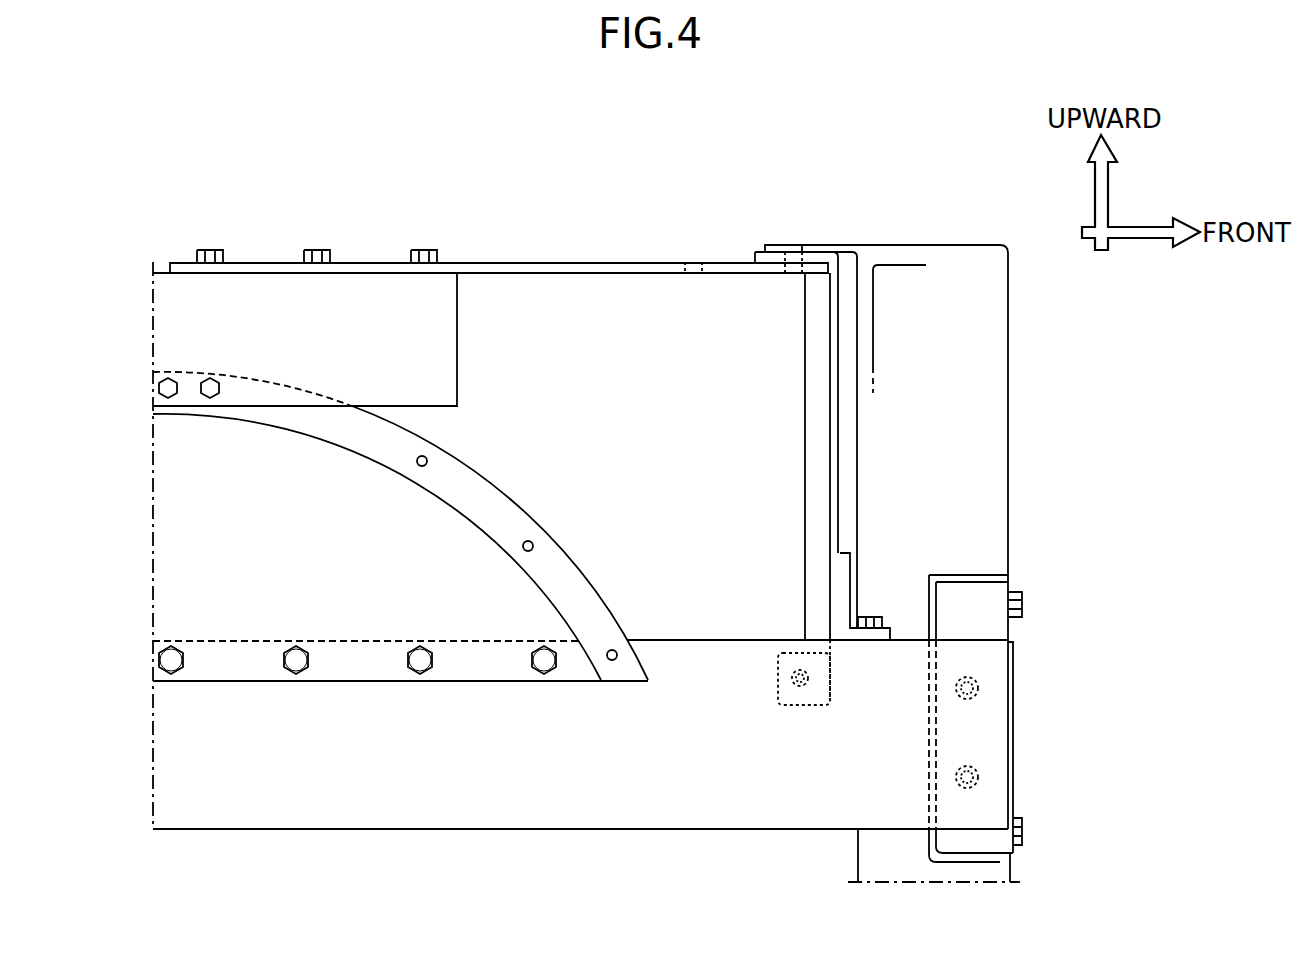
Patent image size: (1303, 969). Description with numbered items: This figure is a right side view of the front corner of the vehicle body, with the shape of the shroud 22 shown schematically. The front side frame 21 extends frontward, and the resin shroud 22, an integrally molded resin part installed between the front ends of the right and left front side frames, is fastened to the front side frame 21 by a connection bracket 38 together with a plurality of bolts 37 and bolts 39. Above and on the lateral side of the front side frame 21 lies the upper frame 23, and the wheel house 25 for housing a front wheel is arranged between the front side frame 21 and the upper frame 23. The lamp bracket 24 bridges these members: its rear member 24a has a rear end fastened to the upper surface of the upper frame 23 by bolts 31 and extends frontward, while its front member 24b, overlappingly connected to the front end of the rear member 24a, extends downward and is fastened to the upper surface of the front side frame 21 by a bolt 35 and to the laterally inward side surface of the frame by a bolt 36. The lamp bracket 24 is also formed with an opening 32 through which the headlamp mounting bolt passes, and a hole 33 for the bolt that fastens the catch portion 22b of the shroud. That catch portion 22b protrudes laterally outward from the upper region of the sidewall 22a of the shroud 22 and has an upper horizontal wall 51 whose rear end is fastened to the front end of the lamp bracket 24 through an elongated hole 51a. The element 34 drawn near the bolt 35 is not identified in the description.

The front side frame 21 is at (988, 730).
The shroud 22 is at (963, 499).
The sidewall 22a is at (945, 365).
The catch portion 22b is at (893, 243).
The upper frame 23 is at (445, 340).
The lamp bracket 24 is at (500, 436).
The rear member 24a is at (603, 262).
The front member 24b is at (815, 450).
The wheel house 25 is at (453, 527).
The bolts 31 is at (423, 252).
The opening 32 is at (690, 263).
The hole 33 is at (800, 268).
The support bracket 34 is at (850, 572).
The bolt 35 is at (870, 615).
The bolt 36 is at (785, 653).
The bolts 37 is at (978, 683).
The connection bracket 38 is at (982, 627).
The bolts 39 is at (1063, 812).
The upper horizontal wall 51 is at (815, 250).
The elongated hole 51a is at (792, 243).